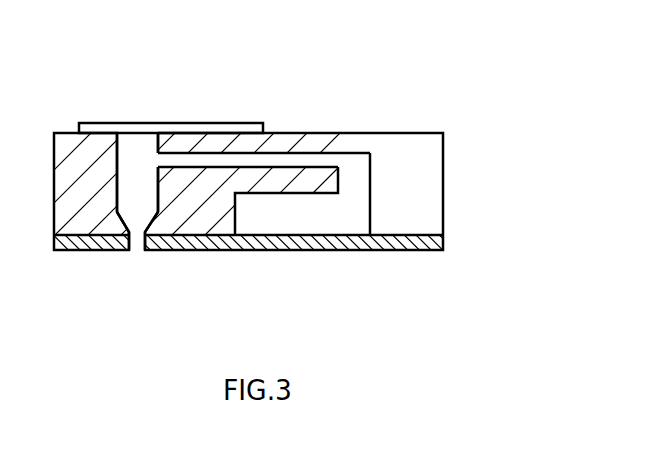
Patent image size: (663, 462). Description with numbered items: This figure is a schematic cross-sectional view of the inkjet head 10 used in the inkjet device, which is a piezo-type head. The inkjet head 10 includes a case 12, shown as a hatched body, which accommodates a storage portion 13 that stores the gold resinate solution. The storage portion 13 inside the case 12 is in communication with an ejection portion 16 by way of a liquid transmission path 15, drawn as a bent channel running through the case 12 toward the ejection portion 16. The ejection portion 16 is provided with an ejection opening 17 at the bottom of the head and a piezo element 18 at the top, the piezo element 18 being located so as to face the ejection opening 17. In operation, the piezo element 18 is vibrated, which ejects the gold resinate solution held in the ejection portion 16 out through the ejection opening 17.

The inkjet head 10 is at (466, 66).
The case 12 is at (430, 157).
The storage portion 13 is at (309, 216).
The liquid transmission path 15 is at (265, 164).
The ejection portion 16 is at (134, 184).
The ejection opening 17 is at (135, 250).
The piezo element 18 is at (210, 125).